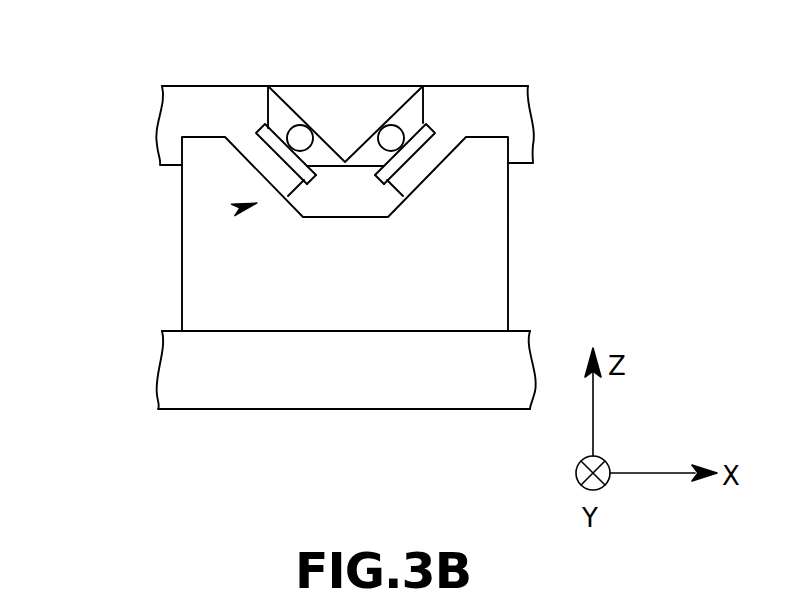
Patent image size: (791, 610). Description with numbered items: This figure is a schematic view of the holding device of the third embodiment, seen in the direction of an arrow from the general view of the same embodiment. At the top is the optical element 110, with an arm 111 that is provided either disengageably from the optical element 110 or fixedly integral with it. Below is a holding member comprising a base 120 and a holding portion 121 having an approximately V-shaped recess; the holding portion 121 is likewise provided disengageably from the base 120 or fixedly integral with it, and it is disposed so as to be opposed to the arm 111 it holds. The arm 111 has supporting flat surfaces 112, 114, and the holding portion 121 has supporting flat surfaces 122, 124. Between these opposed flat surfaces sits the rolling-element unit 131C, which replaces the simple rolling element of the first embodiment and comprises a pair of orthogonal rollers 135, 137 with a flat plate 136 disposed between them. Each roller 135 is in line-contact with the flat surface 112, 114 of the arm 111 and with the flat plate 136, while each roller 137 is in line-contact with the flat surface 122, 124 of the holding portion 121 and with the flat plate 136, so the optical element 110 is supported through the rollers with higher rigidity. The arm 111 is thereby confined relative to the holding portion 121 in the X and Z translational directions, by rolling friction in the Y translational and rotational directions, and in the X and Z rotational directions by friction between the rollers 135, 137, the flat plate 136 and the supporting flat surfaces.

The optical element 110 is at (503, 97).
The arm 111 is at (282, 98).
The supporting flat surface 112 is at (278, 113).
The supporting flat surface 114 is at (406, 108).
The base 120 is at (202, 370).
The holding portion 121 is at (253, 307).
The supporting flat surface 122 is at (252, 163).
The supporting flat surface 124 is at (439, 165).
The rolling-element unit 131C is at (240, 208).
The roller 135 is at (303, 130).
The flat plate 136 is at (382, 188).
The roller 137 is at (284, 193).